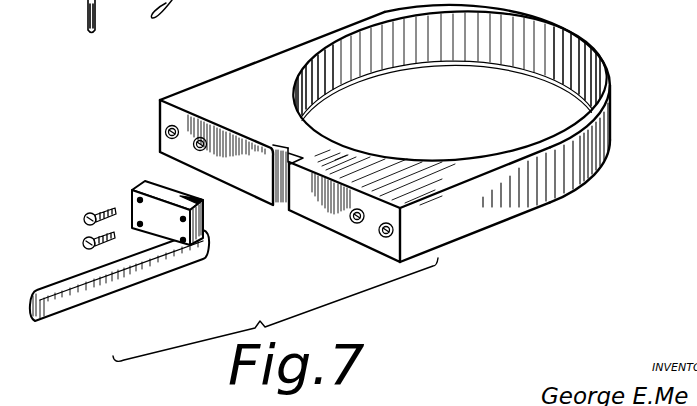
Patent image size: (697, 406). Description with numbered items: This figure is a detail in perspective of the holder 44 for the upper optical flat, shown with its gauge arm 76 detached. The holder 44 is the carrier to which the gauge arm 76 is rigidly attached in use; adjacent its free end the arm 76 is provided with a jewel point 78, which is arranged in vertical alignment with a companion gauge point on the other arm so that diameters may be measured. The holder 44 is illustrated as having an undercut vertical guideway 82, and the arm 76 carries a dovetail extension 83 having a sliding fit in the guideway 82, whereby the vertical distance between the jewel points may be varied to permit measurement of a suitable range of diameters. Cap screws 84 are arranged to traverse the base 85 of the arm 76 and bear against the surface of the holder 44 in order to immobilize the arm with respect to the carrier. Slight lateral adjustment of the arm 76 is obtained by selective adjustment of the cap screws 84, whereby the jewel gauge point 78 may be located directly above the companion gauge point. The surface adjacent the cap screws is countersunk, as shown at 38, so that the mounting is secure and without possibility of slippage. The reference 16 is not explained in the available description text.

The clamp ring 16 is at (272, 102).
The countersunk surface 38 is at (378, 237).
The holder 44 is at (612, 109).
The gauge arm 76 is at (83, 297).
The jewel point 78 is at (38, 292).
The undercut vertical guideway 82 is at (277, 144).
The dovetail extension 83 is at (174, 192).
The cap screws 84 is at (83, 239).
The base of the arm 85 is at (204, 237).